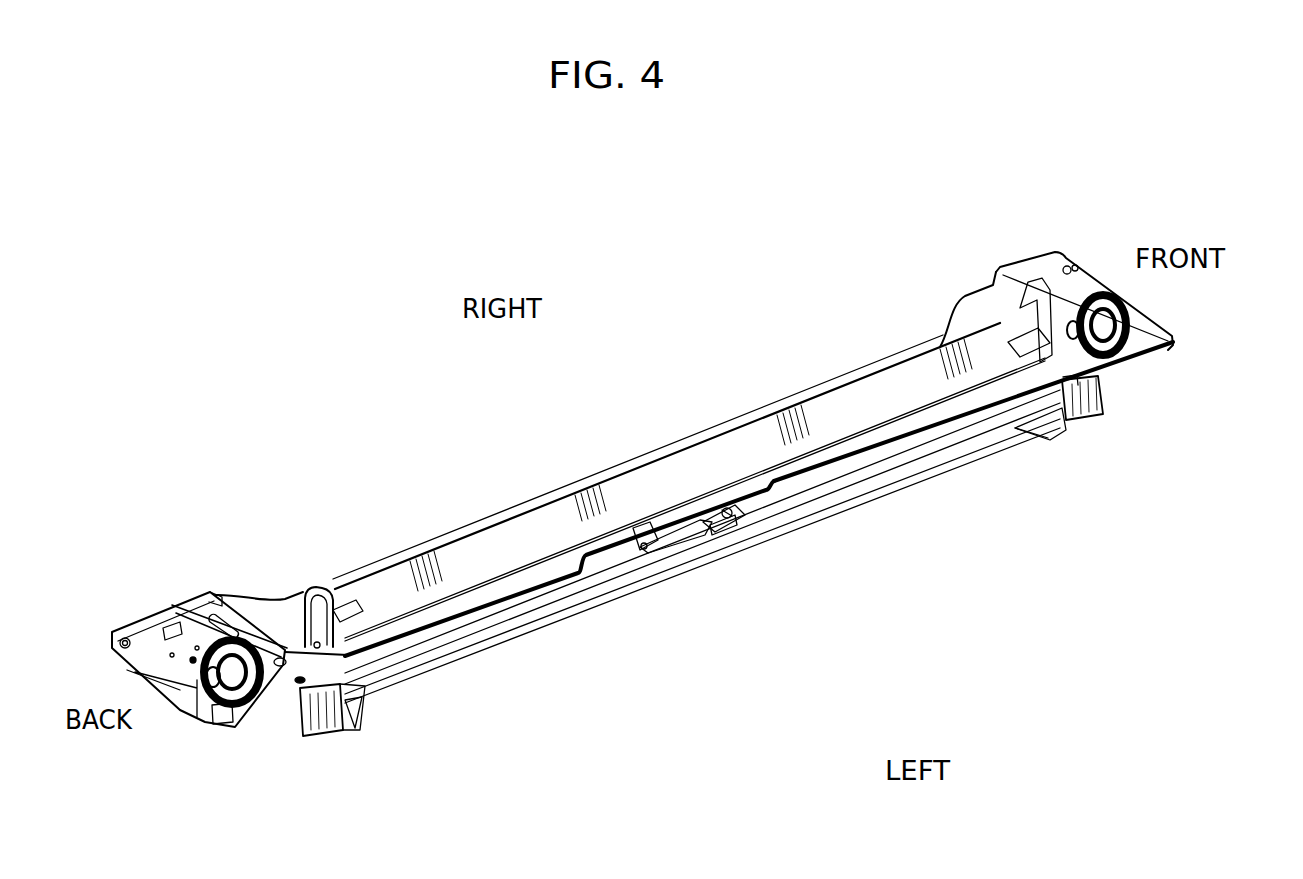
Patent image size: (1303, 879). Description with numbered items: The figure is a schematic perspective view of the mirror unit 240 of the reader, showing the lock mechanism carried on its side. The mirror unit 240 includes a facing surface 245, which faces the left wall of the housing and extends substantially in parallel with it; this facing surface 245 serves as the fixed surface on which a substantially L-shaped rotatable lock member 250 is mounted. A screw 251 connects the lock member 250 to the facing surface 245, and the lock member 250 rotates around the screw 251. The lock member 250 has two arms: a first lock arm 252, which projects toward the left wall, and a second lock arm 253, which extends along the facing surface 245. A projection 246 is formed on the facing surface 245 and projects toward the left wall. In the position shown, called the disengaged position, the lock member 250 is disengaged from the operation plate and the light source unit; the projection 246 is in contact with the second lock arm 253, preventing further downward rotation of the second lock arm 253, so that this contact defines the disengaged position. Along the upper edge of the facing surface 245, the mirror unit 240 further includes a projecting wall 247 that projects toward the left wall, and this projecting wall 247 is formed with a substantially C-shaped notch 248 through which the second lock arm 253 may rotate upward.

The mirror unit 240 is at (1083, 487).
The facing surface 245 is at (612, 553).
The projection 246 is at (655, 546).
The projecting wall 247 is at (856, 450).
The notch 248 is at (768, 489).
The lock member 250 is at (720, 540).
The screw 251 is at (733, 533).
The first lock arm 252 is at (733, 523).
The second lock arm 253 is at (678, 533).